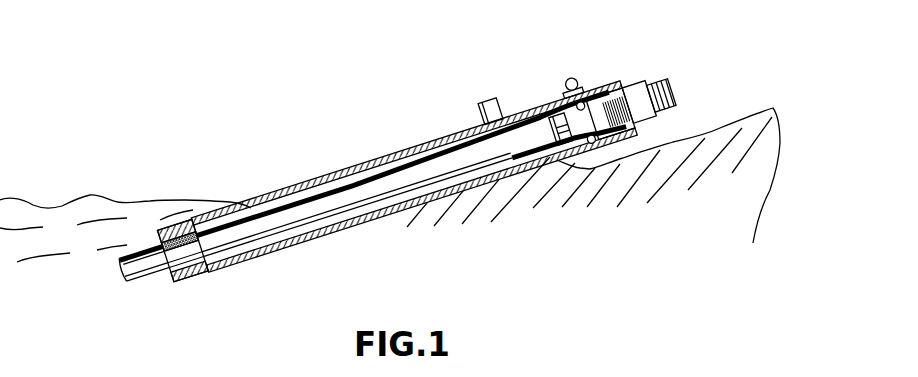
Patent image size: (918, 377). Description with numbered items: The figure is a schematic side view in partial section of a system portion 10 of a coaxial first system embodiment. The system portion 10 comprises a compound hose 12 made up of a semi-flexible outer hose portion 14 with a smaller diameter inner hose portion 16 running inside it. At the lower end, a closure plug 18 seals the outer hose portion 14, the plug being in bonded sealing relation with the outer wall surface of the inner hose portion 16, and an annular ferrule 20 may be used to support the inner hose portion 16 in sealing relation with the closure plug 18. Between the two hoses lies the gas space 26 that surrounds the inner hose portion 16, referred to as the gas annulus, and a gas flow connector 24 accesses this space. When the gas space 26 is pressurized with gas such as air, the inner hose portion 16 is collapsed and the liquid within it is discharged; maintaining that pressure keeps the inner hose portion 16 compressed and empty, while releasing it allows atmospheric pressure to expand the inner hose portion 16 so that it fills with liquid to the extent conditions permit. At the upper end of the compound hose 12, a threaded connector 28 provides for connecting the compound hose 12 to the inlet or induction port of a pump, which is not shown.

The system portion 10 is at (356, 104).
The compound hose 12 is at (343, 152).
The outer hose portion 14 is at (340, 231).
The inner hose portion 16 is at (468, 142).
The closure plug 18 is at (162, 243).
The annular ferrule 20 is at (128, 274).
The gas flow connector 24 is at (498, 98).
The gas space 26 is at (415, 146).
The threaded connector 28 is at (693, 78).